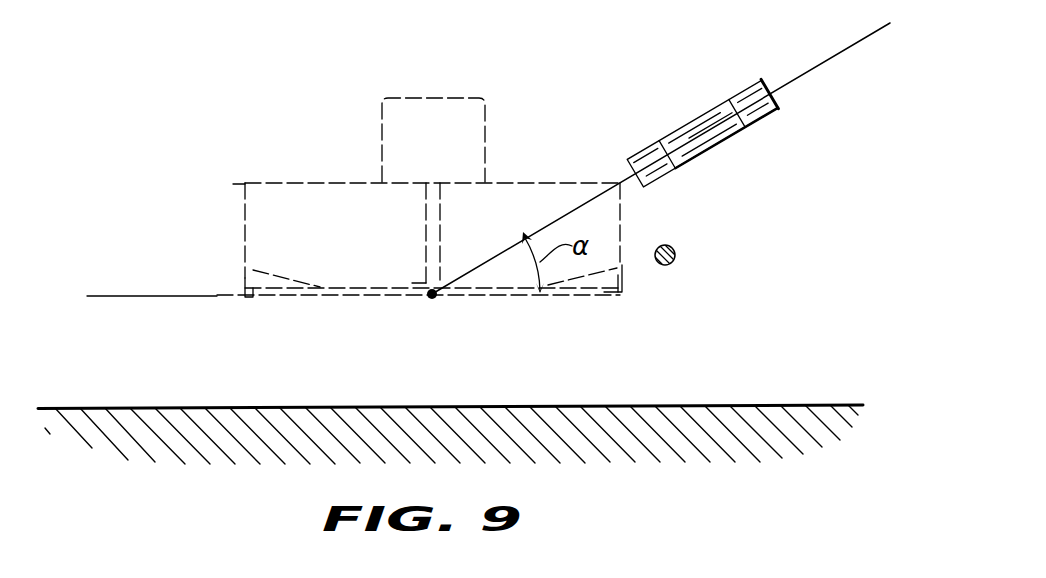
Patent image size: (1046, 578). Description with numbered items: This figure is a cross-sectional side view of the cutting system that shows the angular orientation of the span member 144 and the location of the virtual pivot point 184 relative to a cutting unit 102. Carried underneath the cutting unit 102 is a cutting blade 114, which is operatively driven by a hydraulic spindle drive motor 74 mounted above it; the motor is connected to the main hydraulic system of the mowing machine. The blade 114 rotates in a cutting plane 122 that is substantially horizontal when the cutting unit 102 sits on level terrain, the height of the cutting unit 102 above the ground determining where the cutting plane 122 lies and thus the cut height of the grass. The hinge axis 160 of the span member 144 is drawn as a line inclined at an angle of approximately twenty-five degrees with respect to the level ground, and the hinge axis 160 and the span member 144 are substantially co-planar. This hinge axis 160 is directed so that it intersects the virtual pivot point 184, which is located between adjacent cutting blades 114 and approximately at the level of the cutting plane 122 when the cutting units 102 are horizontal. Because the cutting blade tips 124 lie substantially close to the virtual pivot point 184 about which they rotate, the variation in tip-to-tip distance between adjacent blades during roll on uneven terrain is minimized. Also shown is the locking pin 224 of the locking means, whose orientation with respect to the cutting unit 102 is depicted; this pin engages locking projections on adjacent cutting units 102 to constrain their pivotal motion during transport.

The cutting unit 102 is at (238, 153).
The hydraulic spindle drive motor 74 is at (465, 98).
The span member 144 is at (693, 117).
The hinge axis 160 is at (847, 48).
The cutting blade tip 124 is at (248, 282).
The cutting plane 122 is at (130, 297).
The cutting blade 114 is at (298, 298).
The virtual pivot point 184 is at (437, 299).
The locking pin 224 is at (672, 246).